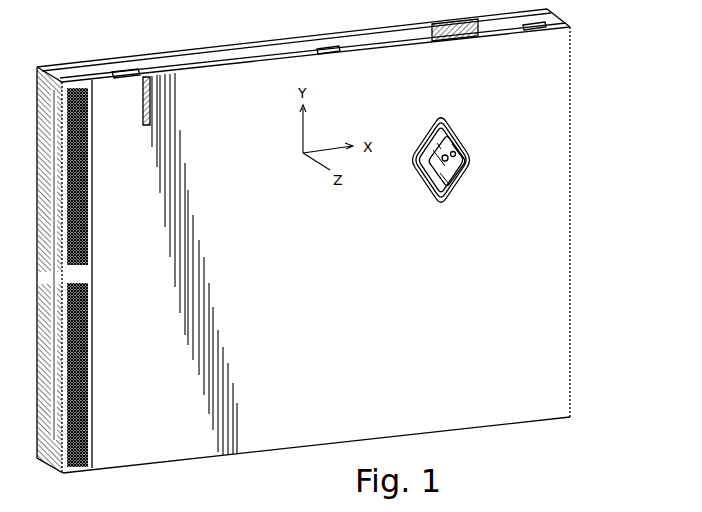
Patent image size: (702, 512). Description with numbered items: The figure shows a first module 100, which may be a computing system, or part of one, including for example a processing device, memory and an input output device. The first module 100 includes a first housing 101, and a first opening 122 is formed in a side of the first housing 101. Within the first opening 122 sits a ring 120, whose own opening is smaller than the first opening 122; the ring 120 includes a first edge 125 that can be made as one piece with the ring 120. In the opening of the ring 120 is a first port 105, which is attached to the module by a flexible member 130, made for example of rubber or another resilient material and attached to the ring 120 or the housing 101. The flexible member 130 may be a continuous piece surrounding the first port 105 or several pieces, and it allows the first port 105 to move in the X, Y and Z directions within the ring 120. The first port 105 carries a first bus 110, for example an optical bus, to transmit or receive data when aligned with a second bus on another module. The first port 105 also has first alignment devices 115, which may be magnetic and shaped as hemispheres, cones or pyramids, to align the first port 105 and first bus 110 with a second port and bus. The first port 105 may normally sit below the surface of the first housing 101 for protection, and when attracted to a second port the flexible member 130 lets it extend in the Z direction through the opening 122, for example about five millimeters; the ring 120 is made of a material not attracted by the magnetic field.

The first module 100 is at (207, 47).
The first housing 101 is at (548, 375).
The first port 105 is at (472, 170).
The first bus 110 is at (458, 155).
The first alignment devices 115 is at (433, 207).
The ring 120 is at (452, 125).
The first opening 122 is at (443, 205).
The first edge 125 is at (434, 116).
The flexible member 130 is at (462, 132).